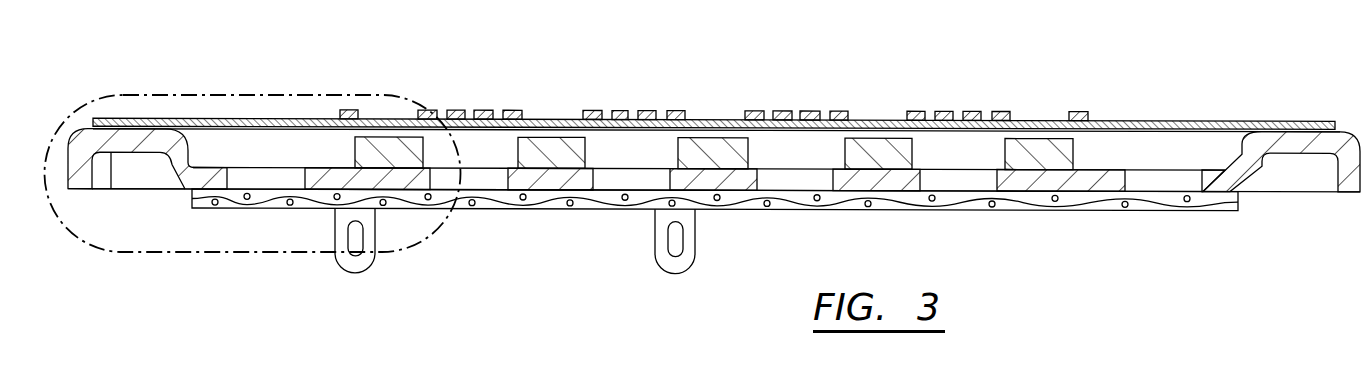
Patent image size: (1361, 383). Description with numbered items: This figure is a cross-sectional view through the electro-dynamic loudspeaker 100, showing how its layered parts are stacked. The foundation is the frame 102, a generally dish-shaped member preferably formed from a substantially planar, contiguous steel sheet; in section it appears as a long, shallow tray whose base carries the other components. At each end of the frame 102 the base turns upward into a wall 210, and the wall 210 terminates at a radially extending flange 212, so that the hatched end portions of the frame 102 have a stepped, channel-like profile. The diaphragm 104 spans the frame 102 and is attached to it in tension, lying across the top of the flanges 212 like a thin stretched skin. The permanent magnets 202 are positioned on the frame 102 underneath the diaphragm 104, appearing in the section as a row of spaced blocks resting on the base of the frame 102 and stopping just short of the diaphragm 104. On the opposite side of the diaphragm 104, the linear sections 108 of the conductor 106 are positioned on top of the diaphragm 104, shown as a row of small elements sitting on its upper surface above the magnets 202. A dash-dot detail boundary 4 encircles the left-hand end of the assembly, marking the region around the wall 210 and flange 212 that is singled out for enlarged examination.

The detail region shown in FIG. 4 is at (288, 95).
The electronic module assembly 100 is at (714, 144).
The frame 102 is at (334, 161).
The diaphragm 104 is at (1177, 120).
The conductor 106 is at (973, 79).
The linear sections 108 is at (808, 110).
The permanent magnets 202 is at (515, 153).
The wall 210 is at (189, 143).
The flange 212 is at (111, 189).